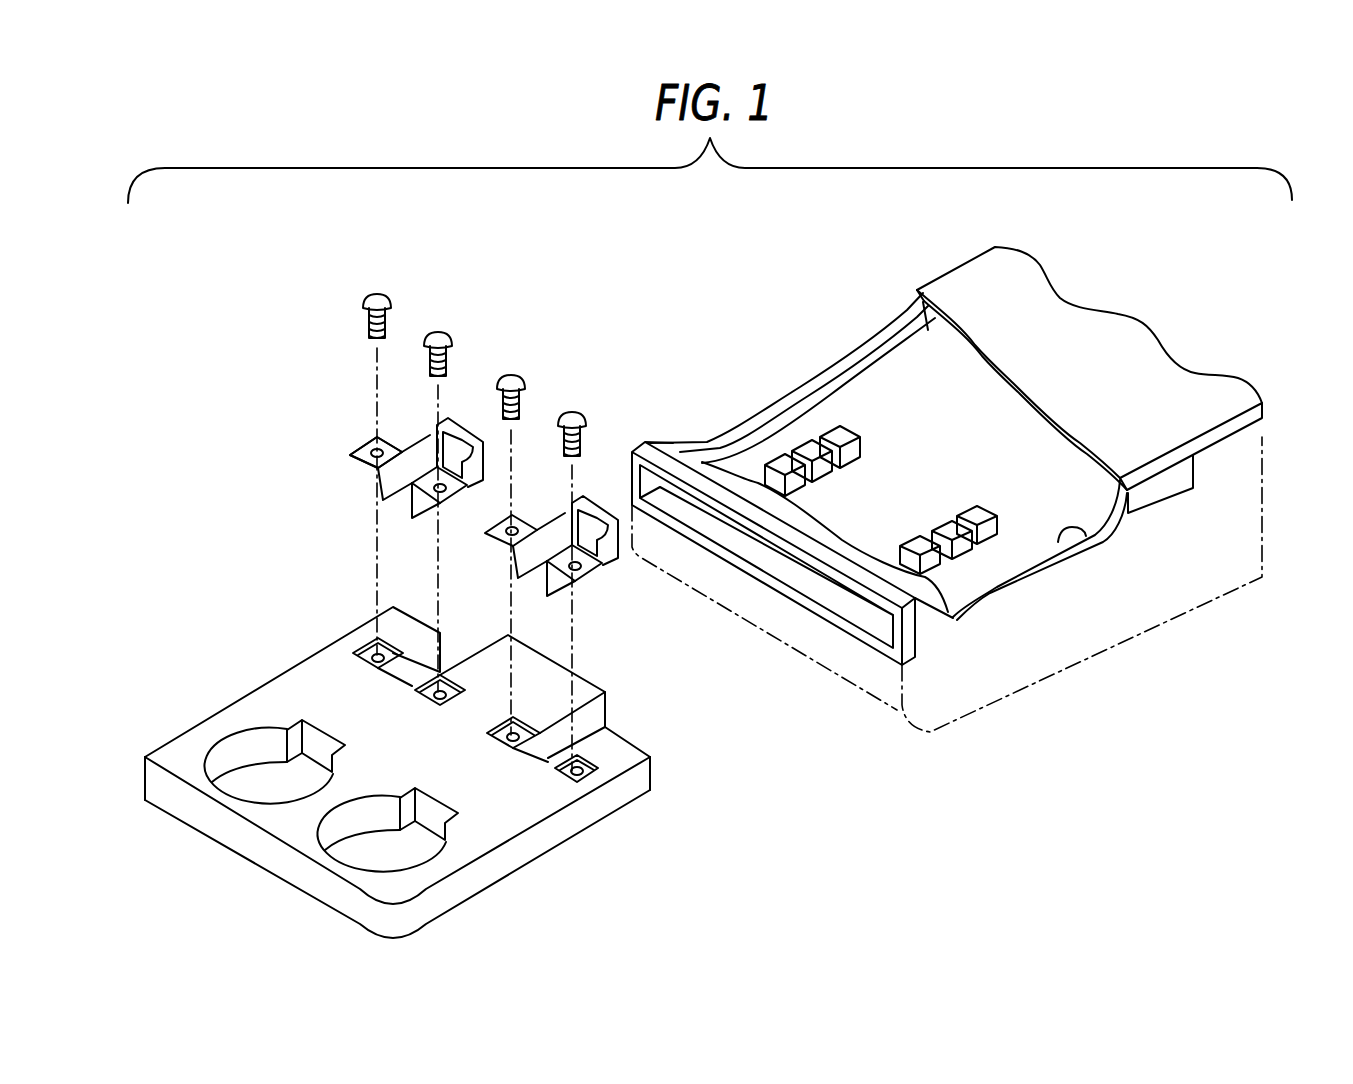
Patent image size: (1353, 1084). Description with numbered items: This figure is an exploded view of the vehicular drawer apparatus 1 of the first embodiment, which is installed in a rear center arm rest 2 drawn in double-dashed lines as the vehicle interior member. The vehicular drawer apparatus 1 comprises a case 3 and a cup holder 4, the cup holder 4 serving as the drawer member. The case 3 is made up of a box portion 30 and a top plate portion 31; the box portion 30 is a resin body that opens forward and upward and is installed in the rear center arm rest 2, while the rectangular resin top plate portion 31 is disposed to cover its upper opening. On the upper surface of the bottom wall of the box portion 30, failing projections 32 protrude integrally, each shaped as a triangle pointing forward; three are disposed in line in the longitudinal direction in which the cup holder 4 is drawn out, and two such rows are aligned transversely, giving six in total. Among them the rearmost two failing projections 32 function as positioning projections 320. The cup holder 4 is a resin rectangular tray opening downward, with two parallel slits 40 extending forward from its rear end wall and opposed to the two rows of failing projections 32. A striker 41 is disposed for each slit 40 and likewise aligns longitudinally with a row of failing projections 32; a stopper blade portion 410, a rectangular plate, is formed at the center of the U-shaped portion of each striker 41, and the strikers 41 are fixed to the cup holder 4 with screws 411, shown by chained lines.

The vehicular drawer apparatus 1 is at (266, 362).
The rear center arm rest 2 is at (1073, 683).
The case 3 is at (956, 414).
The box portion 30 is at (1088, 530).
The top plate portion 31 is at (968, 287).
The failing projections 32 is at (778, 440).
The positioning projections 320 is at (842, 443).
The cup holder 4 is at (397, 766).
The slit 40 is at (432, 657).
The striker 41 is at (350, 454).
The stopper blade portion 410 is at (465, 427).
The screws 411 is at (388, 310).